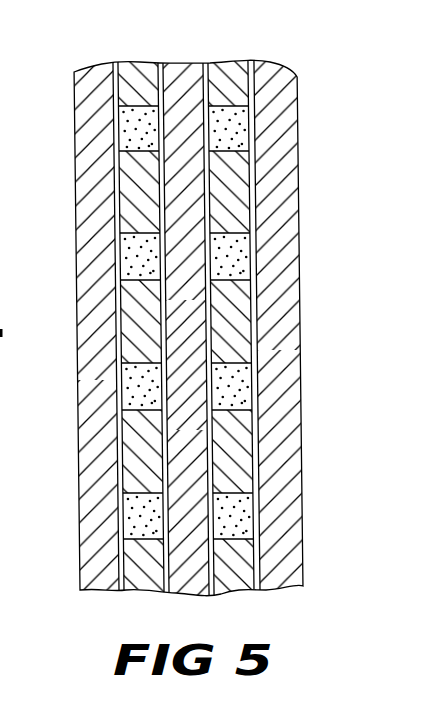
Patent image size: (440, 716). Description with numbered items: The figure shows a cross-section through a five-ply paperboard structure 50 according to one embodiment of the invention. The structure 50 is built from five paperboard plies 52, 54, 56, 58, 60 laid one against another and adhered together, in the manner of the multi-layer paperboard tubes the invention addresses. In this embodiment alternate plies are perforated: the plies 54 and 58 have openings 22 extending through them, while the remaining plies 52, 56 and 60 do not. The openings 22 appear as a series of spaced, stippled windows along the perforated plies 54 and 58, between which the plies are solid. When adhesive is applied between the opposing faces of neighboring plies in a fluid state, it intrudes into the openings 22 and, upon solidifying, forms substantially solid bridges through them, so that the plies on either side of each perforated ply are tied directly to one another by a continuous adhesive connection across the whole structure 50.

The paperboard structure 50 is at (320, 353).
The paperboard ply 52 is at (287, 228).
The paperboard ply 54 is at (230, 75).
The paperboard ply 56 is at (183, 93).
The paperboard ply 58 is at (138, 72).
The paperboard ply 60 is at (83, 230).
The openings 22 is at (235, 108).